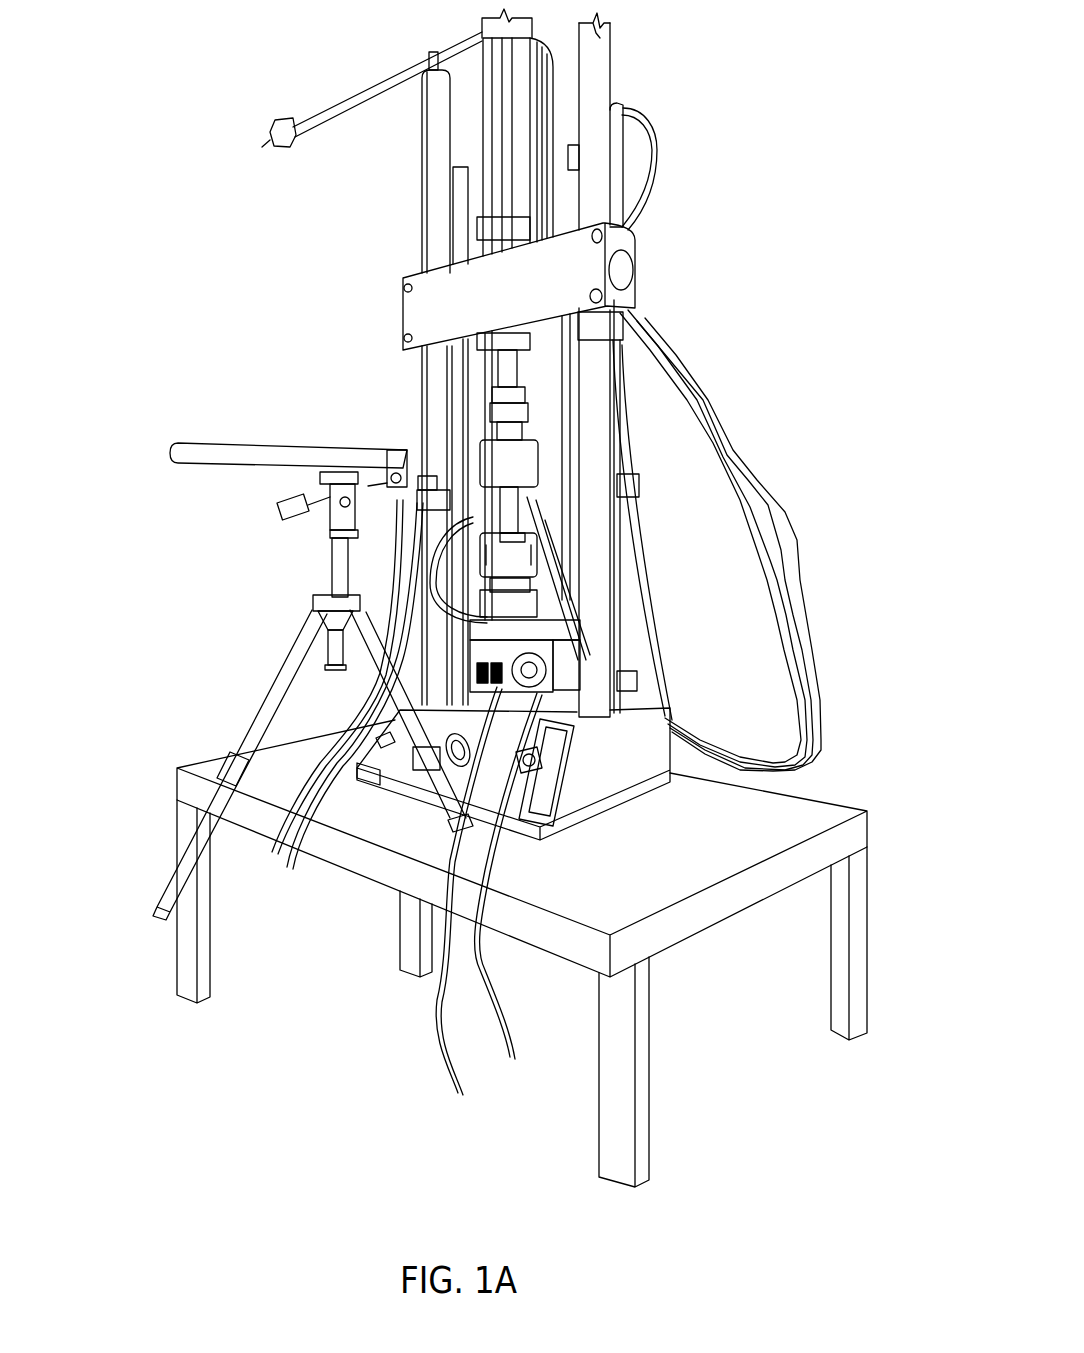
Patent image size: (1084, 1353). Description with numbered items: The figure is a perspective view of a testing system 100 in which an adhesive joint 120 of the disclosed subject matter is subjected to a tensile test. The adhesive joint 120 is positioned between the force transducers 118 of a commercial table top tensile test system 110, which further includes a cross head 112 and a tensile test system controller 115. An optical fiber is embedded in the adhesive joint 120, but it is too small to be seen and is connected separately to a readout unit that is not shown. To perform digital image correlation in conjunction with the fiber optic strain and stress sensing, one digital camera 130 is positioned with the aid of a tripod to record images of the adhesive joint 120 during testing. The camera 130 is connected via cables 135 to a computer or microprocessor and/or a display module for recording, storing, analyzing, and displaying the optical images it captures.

The testing system 100 is at (499, 598).
The table top tensile test system 110 is at (596, 160).
The cross head 112 is at (568, 266).
The tensile test system controller 115 is at (598, 751).
The force transducers 118 is at (513, 460).
The adhesive joint 120 is at (508, 514).
The digital camera 130 is at (430, 492).
The cables 135 is at (278, 886).